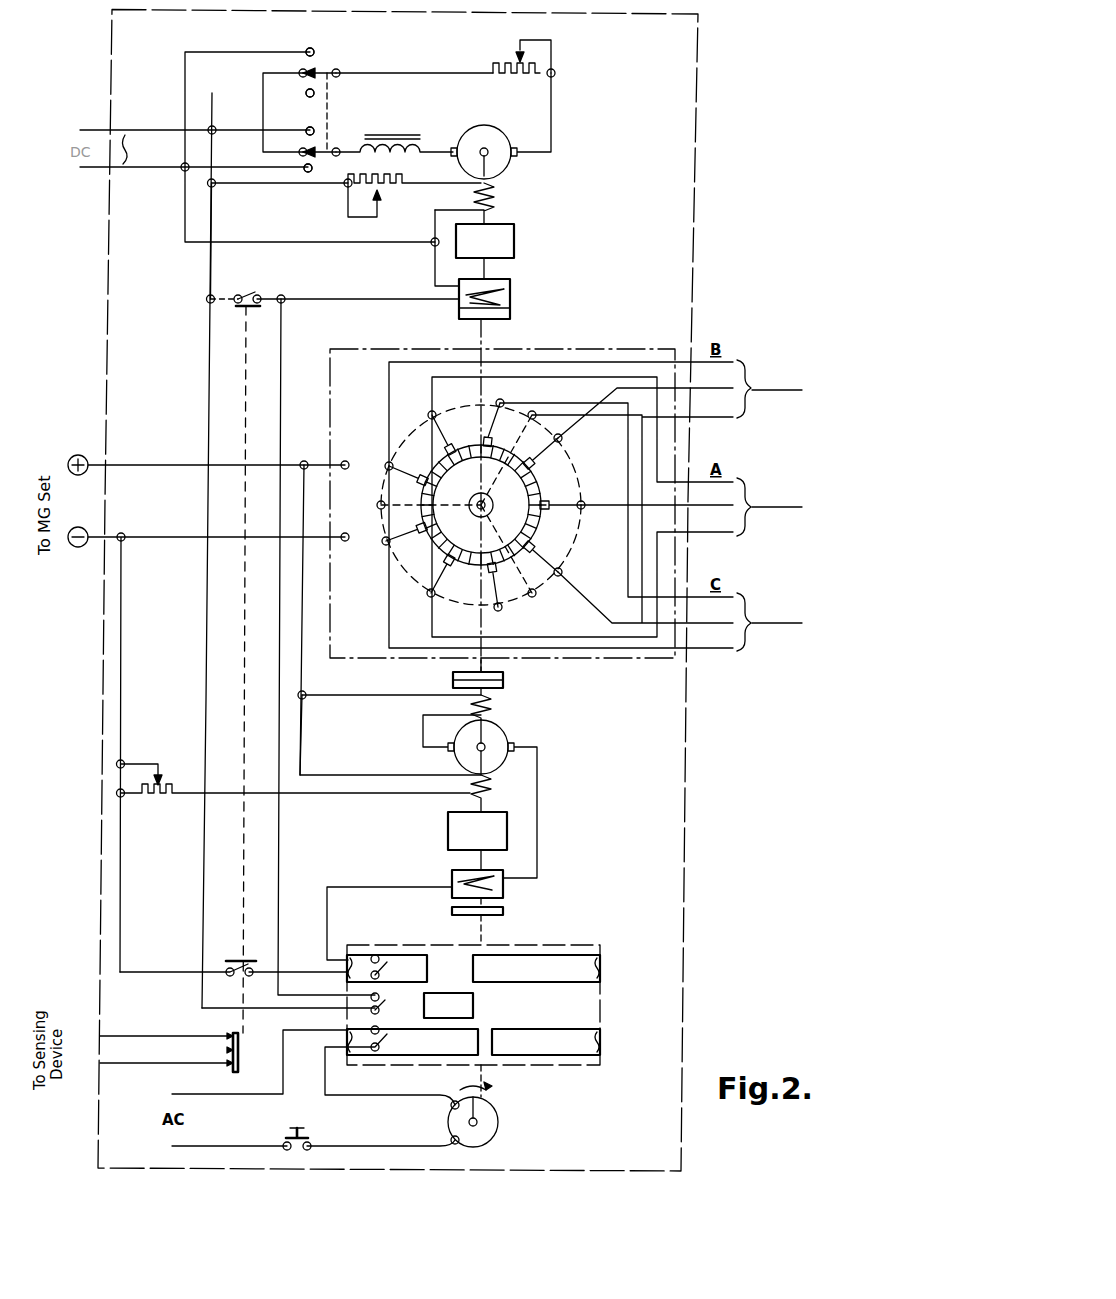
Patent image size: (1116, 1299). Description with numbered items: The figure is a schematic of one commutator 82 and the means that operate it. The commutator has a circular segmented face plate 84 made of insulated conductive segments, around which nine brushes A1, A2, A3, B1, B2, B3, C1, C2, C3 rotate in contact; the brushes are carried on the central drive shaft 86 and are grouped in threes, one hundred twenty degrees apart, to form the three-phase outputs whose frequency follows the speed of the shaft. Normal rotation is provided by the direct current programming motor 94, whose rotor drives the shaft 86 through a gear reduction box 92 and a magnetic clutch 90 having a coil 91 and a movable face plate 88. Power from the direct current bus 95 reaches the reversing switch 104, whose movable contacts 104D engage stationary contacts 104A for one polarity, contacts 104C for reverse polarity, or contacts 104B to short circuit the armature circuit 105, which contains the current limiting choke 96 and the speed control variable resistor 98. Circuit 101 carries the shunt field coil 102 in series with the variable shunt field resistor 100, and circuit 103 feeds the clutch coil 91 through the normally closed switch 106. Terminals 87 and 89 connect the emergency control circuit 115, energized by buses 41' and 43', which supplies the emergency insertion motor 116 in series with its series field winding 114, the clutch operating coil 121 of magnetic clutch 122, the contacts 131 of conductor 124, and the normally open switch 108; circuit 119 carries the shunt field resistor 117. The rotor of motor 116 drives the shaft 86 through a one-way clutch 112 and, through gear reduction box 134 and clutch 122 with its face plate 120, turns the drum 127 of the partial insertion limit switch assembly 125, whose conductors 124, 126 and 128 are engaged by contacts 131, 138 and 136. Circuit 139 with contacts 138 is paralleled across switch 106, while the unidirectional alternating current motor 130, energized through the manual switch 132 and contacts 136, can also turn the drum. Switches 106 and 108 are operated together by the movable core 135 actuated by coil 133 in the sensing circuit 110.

The direct current bus 41' is at (198, 606).
The direct current bus 43' is at (216, 740).
The commutator 82 is at (555, 495).
The segmented face plate 84 is at (481, 505).
The drive shaft 86 is at (470, 512).
The terminal 87 is at (357, 454).
The movable clutch face plate 88 is at (510, 313).
The terminal 89 is at (357, 526).
The magnetic clutch 90 is at (510, 298).
The clutch coil 91 is at (510, 283).
The gear reduction box 92 is at (514, 241).
The direct current programming motor 94 is at (500, 126).
The direct current bus 95 is at (137, 149).
The current limiting choke 96 is at (386, 136).
The speed control variable resistor 98 is at (508, 64).
The variable shunt field resistor 100 is at (412, 201).
The shunt field circuit 101 is at (238, 185).
The shunt field coil 102 is at (498, 204).
The clutch circuit 103 is at (432, 270).
The double pole three position reversing switch 104 is at (319, 124).
The stationary contacts 104A is at (308, 50).
The stationary contacts 104B is at (302, 72).
The stationary contacts 104C is at (314, 93).
The movable contacts 104D is at (330, 68).
The programming motor armature circuit 105 is at (407, 76).
The normally closed switch 106 is at (248, 280).
The normally open switch 108 is at (238, 956).
The sensing device circuit 110 is at (112, 1050).
The one-way clutch 112 is at (503, 680).
The emergency motor series field winding 114 is at (492, 712).
The emergency control circuit 115 is at (382, 698).
The direct current emergency insertion motor 116 is at (452, 760).
The variable shunt field resistor 117 is at (180, 800).
The shunt field circuit 119 is at (300, 760).
The movable clutch face plate 120 is at (503, 914).
The clutch operating coil 121 is at (452, 874).
The magnetic clutch 122 is at (503, 890).
The conductor 124 is at (452, 972).
The partial insertion limit switch assembly 125 is at (494, 1005).
The conductor 126 is at (473, 1005).
The rotating drum 127 is at (510, 1065).
The conductor 128 is at (573, 1026).
The unidirectional alternating current motor 130 is at (498, 1130).
The contacts 131 is at (380, 969).
The manually operable normally open switch 132 is at (290, 1130).
The coil 133 is at (229, 1050).
The alternating current motor circuit and gear reduction box 134 is at (448, 830).
The movable core 135 is at (236, 1072).
The contacts 136 is at (380, 1040).
The contacts 138 is at (380, 1004).
The bypass circuit 139 is at (293, 320).
The brush A1 is at (551, 500).
The brush A2 is at (443, 563).
The brush A3 is at (449, 434).
The brush B1 is at (536, 466).
The brush B2 is at (486, 575).
The brush B3 is at (418, 470).
The brush C1 is at (534, 550).
The brush C2 is at (417, 524).
The brush C3 is at (494, 435).